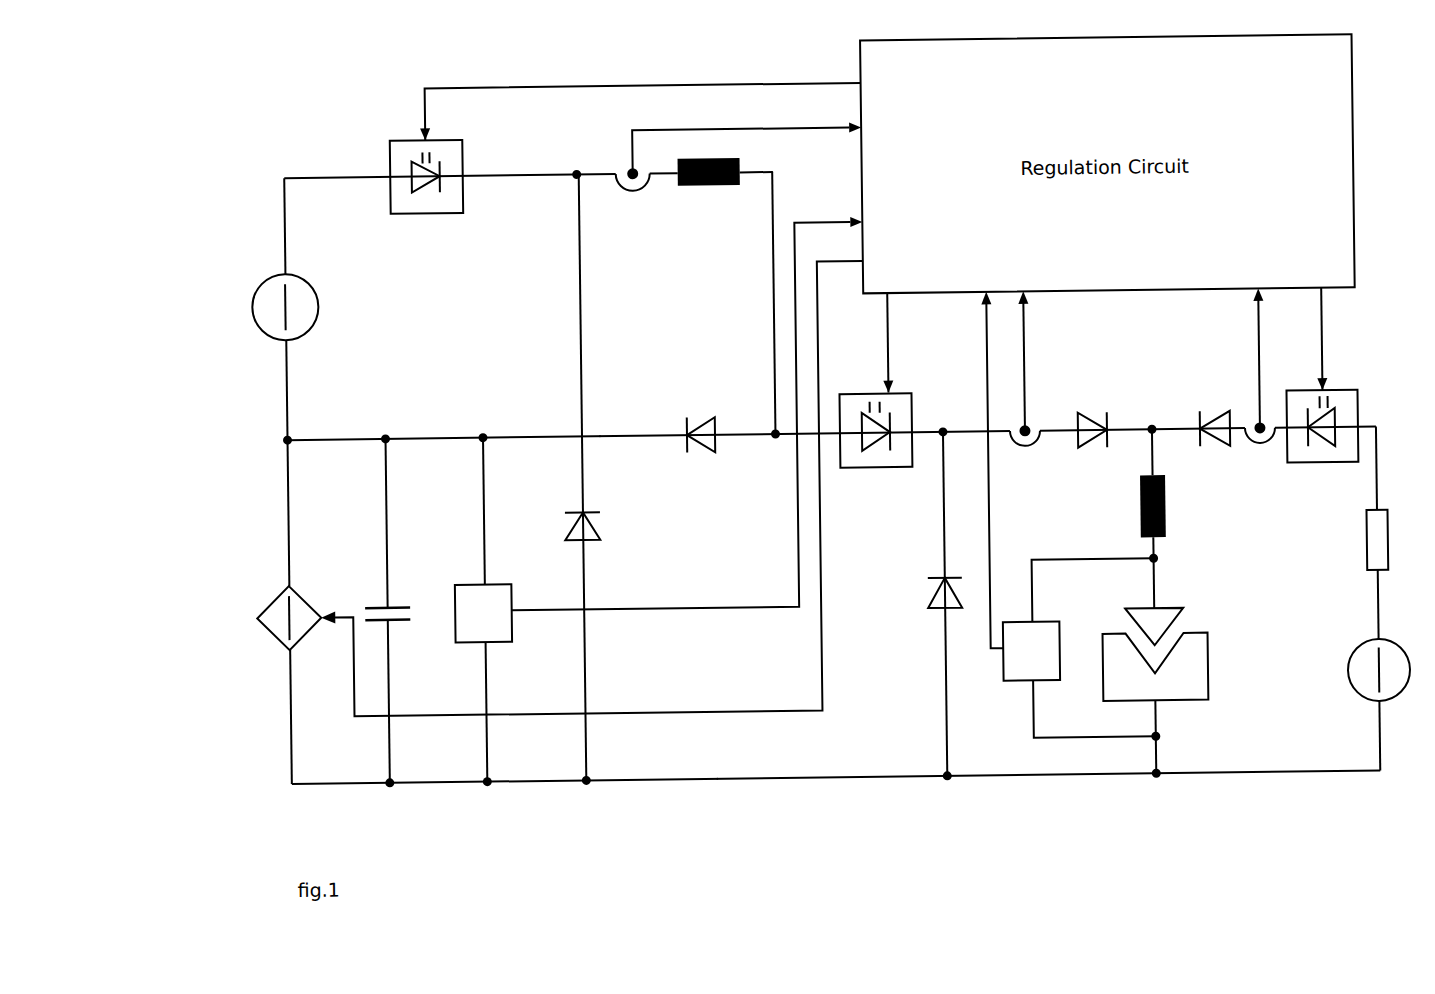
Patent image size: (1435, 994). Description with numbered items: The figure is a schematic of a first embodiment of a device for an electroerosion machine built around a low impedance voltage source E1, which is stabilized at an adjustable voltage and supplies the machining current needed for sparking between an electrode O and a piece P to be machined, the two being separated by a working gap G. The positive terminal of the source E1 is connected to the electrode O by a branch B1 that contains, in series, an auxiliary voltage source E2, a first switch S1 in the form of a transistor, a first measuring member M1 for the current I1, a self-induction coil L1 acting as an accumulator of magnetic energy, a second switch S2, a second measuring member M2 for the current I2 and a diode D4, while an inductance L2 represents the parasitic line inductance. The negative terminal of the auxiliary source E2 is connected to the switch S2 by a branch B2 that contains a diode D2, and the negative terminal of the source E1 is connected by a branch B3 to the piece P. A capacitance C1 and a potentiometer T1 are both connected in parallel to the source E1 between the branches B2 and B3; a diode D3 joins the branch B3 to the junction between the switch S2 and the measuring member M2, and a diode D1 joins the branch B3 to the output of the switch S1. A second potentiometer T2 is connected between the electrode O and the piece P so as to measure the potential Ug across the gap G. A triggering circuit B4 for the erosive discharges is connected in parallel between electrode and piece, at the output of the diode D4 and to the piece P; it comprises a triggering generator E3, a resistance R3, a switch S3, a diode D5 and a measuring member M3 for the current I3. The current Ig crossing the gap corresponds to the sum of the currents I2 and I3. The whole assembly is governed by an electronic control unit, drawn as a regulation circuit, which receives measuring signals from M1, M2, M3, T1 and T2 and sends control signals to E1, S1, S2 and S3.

The low impedance voltage source E1 is at (262, 612).
The auxiliary voltage source E2 is at (268, 299).
The triggering generator E3 is at (1366, 683).
The first switch S1 is at (424, 209).
The second switch S2 is at (876, 468).
The switch S3 is at (1326, 469).
The first measuring member M1 is at (633, 167).
The second measuring member M2 is at (1027, 431).
The measuring member M3 is at (1262, 429).
The self-induction coil L1 is at (716, 185).
The parasitic line inductance L2 is at (1164, 512).
The branch B1 is at (777, 171).
The branch B2 is at (604, 433).
The branch B3 is at (713, 778).
The triggering circuit B4 is at (1378, 430).
The diode D1 is at (596, 528).
The diode D2 is at (698, 420).
The diode D3 is at (924, 595).
The diode D4 is at (1091, 414).
The diode D5 is at (1214, 413).
The capacitance C1 is at (372, 603).
The potentiometer T1 is at (659, 499).
The second potentiometer T2 is at (1070, 516).
The resistance R3 is at (1366, 539).
The current I1 is at (759, 265).
The current I2 is at (1036, 461).
The current I3 is at (1237, 463).
The current crossing the gap Ig is at (1175, 548).
The potential across the gap Ug is at (1231, 606).
The electrode O is at (1141, 620).
The working gap G is at (1138, 650).
The piece to be machined P is at (1187, 677).